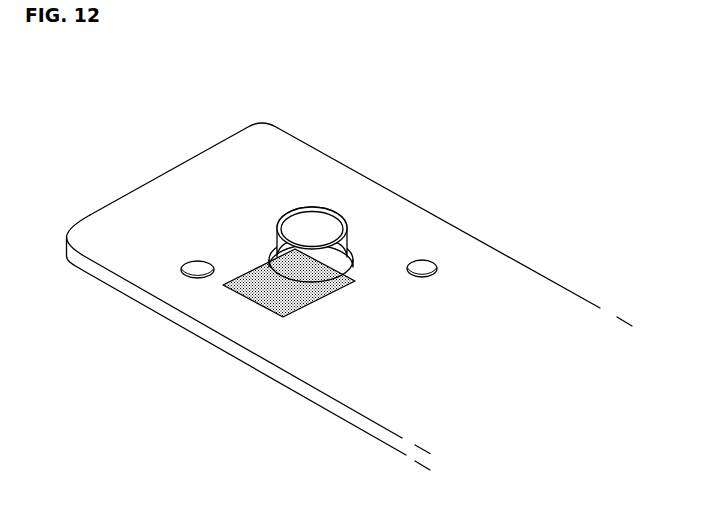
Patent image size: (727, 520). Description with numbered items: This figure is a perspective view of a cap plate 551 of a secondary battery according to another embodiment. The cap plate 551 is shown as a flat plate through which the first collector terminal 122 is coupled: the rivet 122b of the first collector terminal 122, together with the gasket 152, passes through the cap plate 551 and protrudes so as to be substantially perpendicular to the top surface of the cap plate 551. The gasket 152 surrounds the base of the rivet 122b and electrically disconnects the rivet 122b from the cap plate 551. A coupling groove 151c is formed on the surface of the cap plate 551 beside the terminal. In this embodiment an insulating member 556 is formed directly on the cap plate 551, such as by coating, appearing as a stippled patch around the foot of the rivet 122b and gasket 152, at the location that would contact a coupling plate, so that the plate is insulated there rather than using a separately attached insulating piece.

The cap plate 551 is at (130, 218).
The first collector terminal 122 is at (326, 177).
The rivet 122b is at (337, 252).
The gasket 152 is at (352, 266).
The coupling groove 151c is at (421, 272).
The insulating member 556 is at (260, 305).